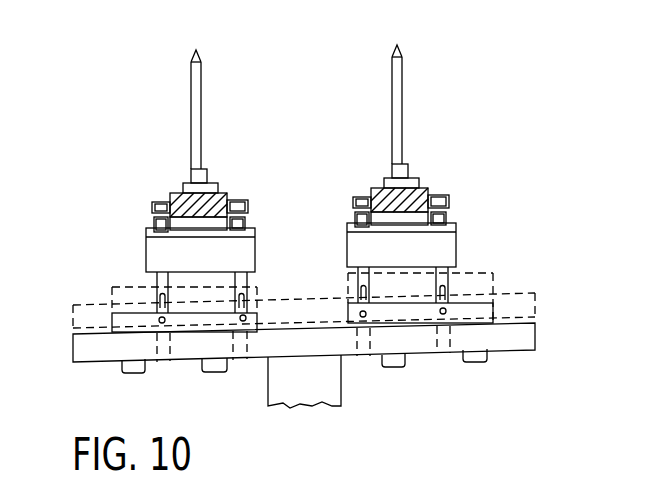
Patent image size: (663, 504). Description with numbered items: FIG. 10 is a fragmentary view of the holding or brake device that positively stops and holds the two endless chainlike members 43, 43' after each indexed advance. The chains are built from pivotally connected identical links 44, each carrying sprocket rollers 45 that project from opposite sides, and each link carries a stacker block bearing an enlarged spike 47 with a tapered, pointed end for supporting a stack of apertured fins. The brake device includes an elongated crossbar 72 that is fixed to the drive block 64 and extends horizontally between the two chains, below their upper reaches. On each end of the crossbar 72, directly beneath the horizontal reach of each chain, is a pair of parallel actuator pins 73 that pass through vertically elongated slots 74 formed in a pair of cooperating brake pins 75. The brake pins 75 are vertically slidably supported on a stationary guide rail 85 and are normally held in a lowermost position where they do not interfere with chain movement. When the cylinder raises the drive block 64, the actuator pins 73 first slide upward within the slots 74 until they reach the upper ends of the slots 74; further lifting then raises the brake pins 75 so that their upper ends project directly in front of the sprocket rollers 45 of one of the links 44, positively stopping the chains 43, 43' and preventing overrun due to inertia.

The endless chainlike member 43 is at (173, 189).
The endless chainlike member 43' is at (444, 184).
The link 44 is at (203, 200).
The sprocket roller 45 is at (237, 198).
The spike 47 is at (193, 93).
The drive block 64 is at (325, 388).
The crossbar 72 is at (510, 340).
The actuator pin 73 is at (160, 321).
The slot 74 is at (157, 303).
The brake pin 75 is at (158, 272).
The stationary guide rail 85 is at (200, 250).